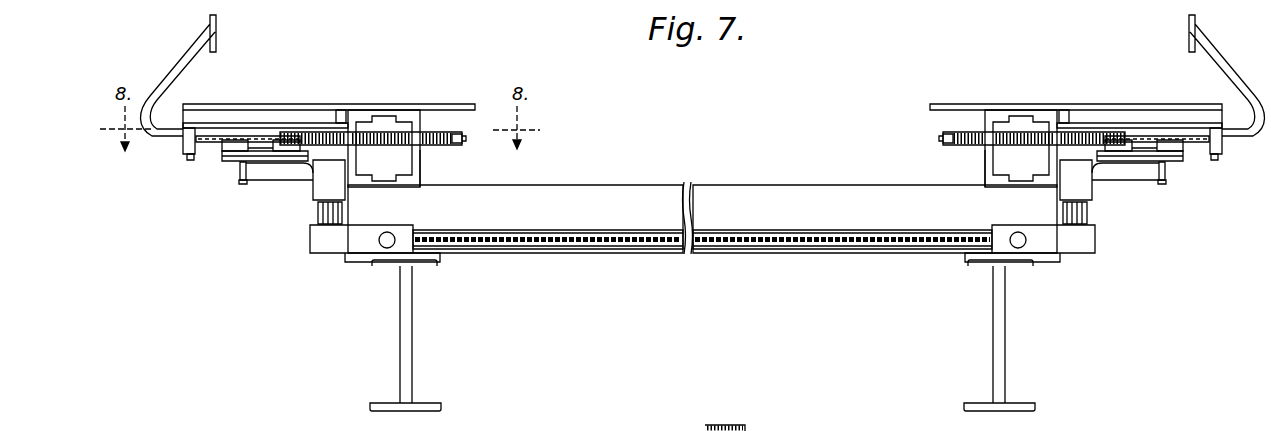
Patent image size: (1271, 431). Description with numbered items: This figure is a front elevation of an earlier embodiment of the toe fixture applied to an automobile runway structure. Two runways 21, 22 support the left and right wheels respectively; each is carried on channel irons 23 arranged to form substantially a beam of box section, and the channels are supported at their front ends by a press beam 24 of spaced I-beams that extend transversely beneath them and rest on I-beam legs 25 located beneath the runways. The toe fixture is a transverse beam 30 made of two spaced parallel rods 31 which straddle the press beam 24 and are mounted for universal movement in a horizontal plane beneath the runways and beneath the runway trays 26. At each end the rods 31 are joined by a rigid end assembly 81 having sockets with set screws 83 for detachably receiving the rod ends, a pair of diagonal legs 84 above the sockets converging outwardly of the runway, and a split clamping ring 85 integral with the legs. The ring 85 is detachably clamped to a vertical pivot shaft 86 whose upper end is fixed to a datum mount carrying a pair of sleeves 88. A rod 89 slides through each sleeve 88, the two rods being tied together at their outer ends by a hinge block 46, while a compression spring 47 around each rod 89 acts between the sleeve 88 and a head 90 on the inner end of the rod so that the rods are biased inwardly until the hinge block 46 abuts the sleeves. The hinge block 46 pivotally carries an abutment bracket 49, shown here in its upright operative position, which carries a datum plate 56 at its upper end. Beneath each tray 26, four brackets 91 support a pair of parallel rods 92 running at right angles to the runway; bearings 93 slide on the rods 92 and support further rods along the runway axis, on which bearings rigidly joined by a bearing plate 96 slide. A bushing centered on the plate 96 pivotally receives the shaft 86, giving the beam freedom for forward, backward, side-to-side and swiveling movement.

The runway 21 is at (969, 102).
The runway 22 is at (425, 103).
The channel irons 23 is at (421, 170).
The press beam 24 is at (738, 197).
The I-beam legs 25 is at (412, 307).
The tray 26 is at (294, 112).
The transverse beam 30 is at (497, 228).
The rods 31 is at (591, 231).
The hinge block 46 is at (191, 161).
The compression springs 47 is at (386, 146).
The abutment bracket 49 is at (182, 143).
The datum plate 56 is at (216, 42).
The end assemblies 81 is at (305, 243).
The set screws 83 is at (388, 239).
The diagonal legs 84 is at (277, 181).
The split clamping ring 85 is at (240, 176).
The vertical pivot shaft 86 is at (244, 185).
The sleeves 88 is at (246, 136).
The rod 89 is at (463, 142).
The head 90 is at (456, 134).
The brackets 91 is at (340, 124).
The rods 92 is at (331, 146).
The bearings 93 is at (233, 140).
The bearing plate 96 is at (226, 161).